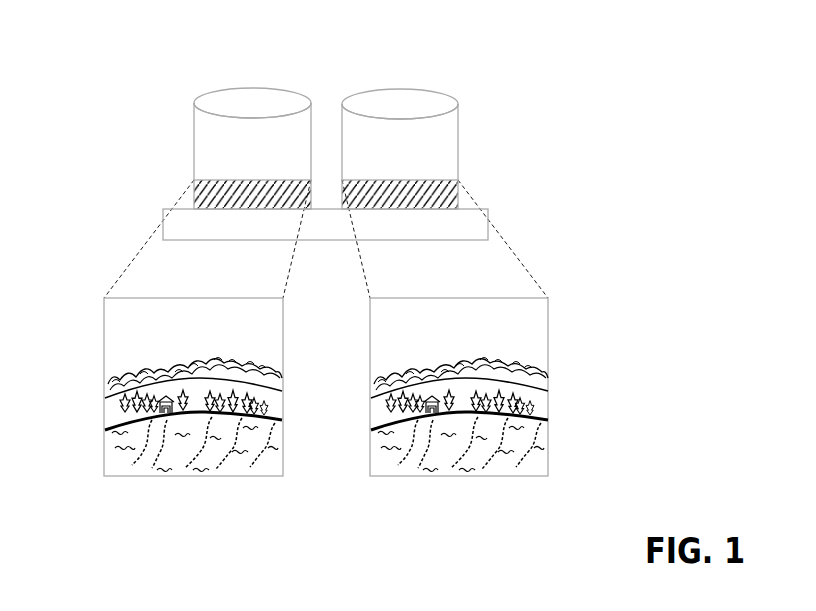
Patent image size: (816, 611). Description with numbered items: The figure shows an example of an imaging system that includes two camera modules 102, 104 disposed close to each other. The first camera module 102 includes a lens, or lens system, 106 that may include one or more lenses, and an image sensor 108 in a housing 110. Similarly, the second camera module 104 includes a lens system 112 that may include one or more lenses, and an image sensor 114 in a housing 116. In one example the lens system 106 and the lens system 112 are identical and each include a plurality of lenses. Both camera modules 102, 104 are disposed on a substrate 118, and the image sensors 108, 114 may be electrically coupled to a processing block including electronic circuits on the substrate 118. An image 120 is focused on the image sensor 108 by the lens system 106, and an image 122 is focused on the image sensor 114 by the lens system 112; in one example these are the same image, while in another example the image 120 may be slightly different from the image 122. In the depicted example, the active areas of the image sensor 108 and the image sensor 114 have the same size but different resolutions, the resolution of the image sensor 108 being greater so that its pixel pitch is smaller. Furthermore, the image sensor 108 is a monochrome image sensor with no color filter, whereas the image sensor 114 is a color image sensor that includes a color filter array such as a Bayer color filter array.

The camera module 102 is at (225, 117).
The camera module 104 is at (435, 115).
The lens system 106 is at (263, 90).
The image sensor 108 is at (210, 181).
The housing 110 is at (193, 128).
The lens system 112 is at (428, 90).
The image sensor 114 is at (435, 182).
The housing 116 is at (458, 128).
The substrate 118 is at (490, 225).
The image 120 is at (105, 357).
The image 122 is at (548, 356).